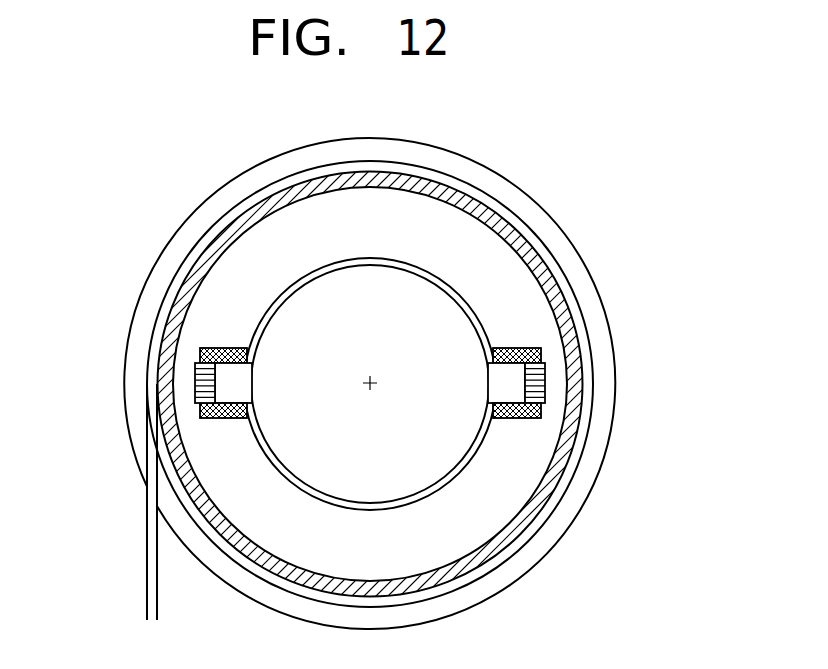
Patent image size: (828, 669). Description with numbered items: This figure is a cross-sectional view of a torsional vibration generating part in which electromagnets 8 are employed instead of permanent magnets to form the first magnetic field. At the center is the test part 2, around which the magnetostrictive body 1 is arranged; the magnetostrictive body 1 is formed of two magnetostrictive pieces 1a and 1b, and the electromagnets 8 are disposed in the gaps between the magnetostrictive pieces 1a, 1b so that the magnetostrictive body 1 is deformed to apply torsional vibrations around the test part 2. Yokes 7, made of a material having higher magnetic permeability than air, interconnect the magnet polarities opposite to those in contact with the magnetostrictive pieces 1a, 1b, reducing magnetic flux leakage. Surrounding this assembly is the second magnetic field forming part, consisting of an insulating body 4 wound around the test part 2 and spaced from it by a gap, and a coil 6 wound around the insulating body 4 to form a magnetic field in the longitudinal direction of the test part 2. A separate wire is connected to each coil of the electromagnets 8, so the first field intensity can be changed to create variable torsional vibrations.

The magnetostrictive body 1 is at (598, 371).
The magnetostrictive piece 1a is at (488, 333).
The magnetostrictive piece 1b is at (483, 438).
The test part 2 is at (447, 318).
The insulating body 4 is at (497, 217).
The coil 6 is at (449, 183).
The yoke 7 is at (222, 348).
The electromagnet 8 is at (195, 381).